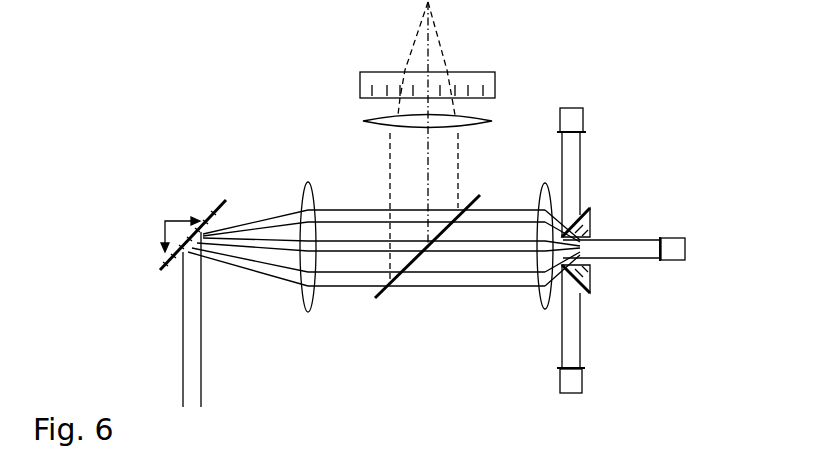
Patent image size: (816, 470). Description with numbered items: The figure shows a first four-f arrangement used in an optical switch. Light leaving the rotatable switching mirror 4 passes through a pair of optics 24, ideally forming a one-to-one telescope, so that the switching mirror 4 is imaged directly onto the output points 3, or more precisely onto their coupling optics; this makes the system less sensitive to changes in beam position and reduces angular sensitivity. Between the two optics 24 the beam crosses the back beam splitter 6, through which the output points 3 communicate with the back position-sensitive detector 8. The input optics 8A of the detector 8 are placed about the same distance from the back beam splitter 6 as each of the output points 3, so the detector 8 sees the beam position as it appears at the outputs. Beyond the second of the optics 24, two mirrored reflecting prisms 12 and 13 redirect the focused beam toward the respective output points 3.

The output point 3 is at (583, 132).
The switching mirror 4 is at (220, 208).
The back beam splitter 6 is at (377, 300).
The position-sensitive detector 8 is at (474, 72).
The input optics 8A is at (492, 118).
The mirrored reflecting prism 12 is at (592, 212).
The mirrored reflecting prism 13 is at (588, 289).
The optics 24 is at (306, 313).